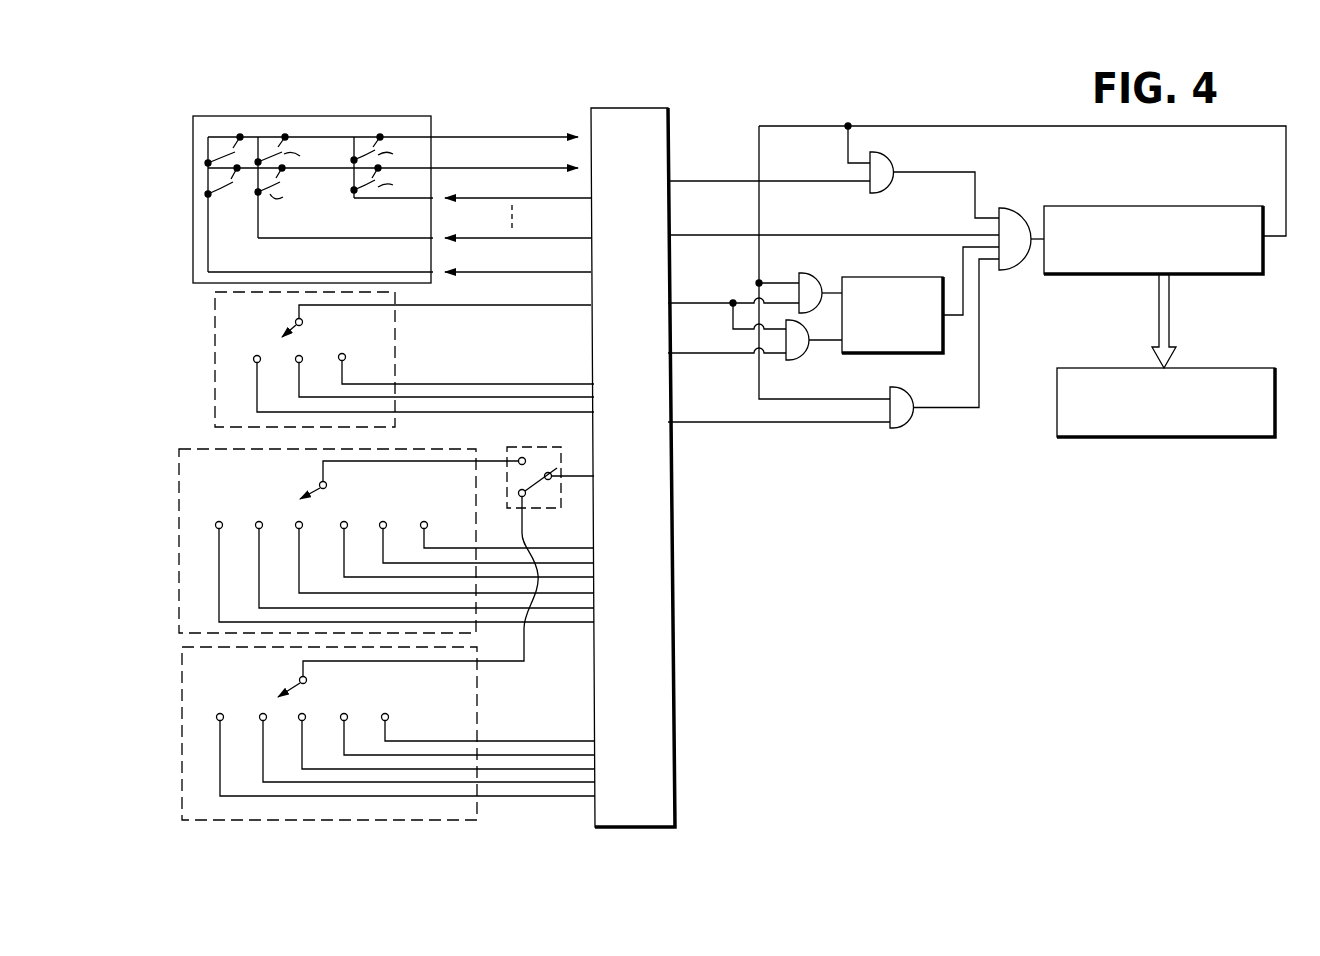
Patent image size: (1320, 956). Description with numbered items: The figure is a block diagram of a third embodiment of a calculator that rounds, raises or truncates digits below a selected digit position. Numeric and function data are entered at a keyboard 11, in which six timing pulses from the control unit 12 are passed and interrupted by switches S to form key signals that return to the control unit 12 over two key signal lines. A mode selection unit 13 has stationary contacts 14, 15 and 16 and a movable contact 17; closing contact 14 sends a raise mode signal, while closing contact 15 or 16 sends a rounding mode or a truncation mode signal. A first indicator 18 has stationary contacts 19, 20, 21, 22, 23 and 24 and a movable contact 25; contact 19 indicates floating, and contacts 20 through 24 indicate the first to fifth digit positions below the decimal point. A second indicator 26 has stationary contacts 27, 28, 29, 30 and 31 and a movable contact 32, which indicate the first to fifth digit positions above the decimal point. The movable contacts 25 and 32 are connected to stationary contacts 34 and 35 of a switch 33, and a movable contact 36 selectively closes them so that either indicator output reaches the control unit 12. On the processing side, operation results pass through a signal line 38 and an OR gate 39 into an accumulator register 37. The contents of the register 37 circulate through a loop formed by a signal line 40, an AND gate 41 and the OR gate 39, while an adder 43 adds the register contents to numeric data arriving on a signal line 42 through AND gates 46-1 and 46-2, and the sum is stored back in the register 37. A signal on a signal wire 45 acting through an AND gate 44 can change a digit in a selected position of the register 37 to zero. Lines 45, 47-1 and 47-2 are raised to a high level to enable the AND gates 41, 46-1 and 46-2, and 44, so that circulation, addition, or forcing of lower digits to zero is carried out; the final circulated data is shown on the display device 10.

The display device 10 is at (1157, 439).
The keyboard 11 is at (433, 120).
The control unit 12 is at (670, 125).
The mode selection unit 13 is at (204, 318).
The stationary contact 14 is at (254, 362).
The stationary contact 15 is at (297, 362).
The stationary contact 16 is at (343, 353).
The movable contact 17 is at (295, 321).
The first indicator 18 is at (187, 440).
The stationary contact 19 is at (217, 521).
The stationary contact 20 is at (257, 521).
The stationary contact 21 is at (303, 520).
The stationary contact 22 is at (347, 521).
The stationary contact 23 is at (386, 521).
The stationary contact 24 is at (426, 521).
The movable contact 25 is at (319, 483).
The second indicator 26 is at (487, 690).
The stationary contact 27 is at (218, 713).
The stationary contact 28 is at (261, 713).
The stationary contact 29 is at (305, 713).
The stationary contact 30 is at (346, 713).
The stationary contact 31 is at (387, 713).
The movable contact 32 is at (300, 677).
The switch 33 is at (507, 492).
The stationary contact 34 is at (523, 457).
The stationary contact 35 is at (526, 497).
The movable contact 36 is at (553, 473).
The accumulator register 37 is at (1133, 205).
The signal line 38 is at (692, 234).
The OR gate 39 is at (1004, 207).
The signal line 40 is at (1218, 127).
The AND gate 41 is at (886, 157).
The signal line 42 is at (700, 355).
The adder 43 is at (923, 355).
The AND gate 44 is at (915, 423).
The signal wire 45 is at (762, 424).
The AND gate 46-1 is at (806, 274).
The AND gate 46-2 is at (806, 352).
The signal line 47-1 is at (700, 180).
The signal line 47-2 is at (683, 302).